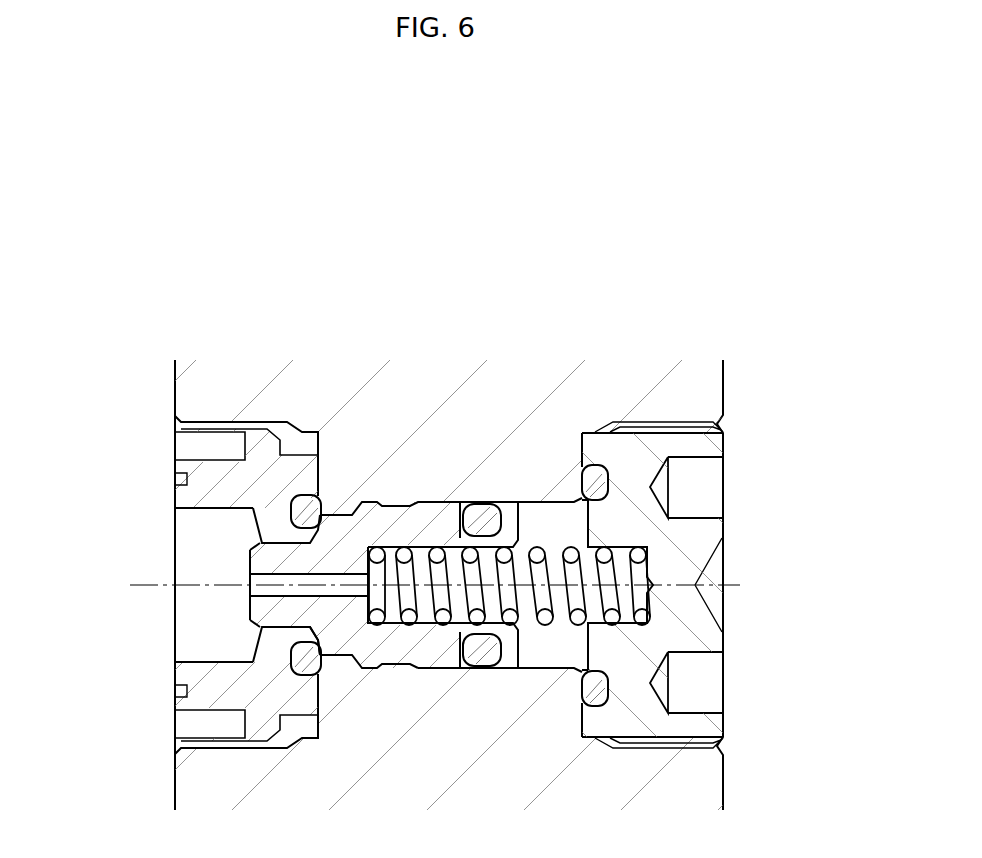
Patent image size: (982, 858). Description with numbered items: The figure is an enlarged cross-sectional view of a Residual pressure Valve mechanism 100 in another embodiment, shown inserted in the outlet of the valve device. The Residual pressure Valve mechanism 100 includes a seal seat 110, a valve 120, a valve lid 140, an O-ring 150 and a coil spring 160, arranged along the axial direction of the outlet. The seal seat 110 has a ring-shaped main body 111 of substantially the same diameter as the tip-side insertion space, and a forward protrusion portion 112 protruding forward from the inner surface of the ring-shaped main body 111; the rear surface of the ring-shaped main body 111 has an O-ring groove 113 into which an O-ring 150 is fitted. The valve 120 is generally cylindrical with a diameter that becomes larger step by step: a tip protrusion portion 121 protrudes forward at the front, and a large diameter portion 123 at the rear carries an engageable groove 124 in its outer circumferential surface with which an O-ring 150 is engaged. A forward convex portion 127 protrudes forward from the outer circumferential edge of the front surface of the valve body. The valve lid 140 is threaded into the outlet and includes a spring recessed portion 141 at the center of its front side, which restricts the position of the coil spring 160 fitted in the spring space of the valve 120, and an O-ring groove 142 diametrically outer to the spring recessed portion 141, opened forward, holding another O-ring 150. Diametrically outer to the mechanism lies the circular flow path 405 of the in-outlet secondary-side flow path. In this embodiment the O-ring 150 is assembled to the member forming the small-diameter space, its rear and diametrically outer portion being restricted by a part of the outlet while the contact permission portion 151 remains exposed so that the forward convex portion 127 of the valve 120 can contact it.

The Residual pressure Valve mechanism 100 is at (741, 435).
The seal seat 110 is at (174, 703).
The ring-shaped main body 111 is at (257, 440).
The forward protrusion portion 112 is at (193, 493).
The O-ring groove 113 is at (262, 511).
The valve 120 is at (423, 653).
The tip protrusion portion 121 is at (263, 615).
The large diameter portion 123 is at (413, 517).
The engageable groove 124 is at (490, 636).
The forward convex portion 127 is at (300, 665).
The circular flow path 405 is at (383, 675).
The valve lid 140 is at (726, 645).
The spring recessed portion 141 is at (648, 567).
The O-ring groove 142 is at (597, 488).
The O-ring 150 is at (299, 668).
The contact permission portion 151 is at (320, 497).
The coil spring 160 is at (639, 548).